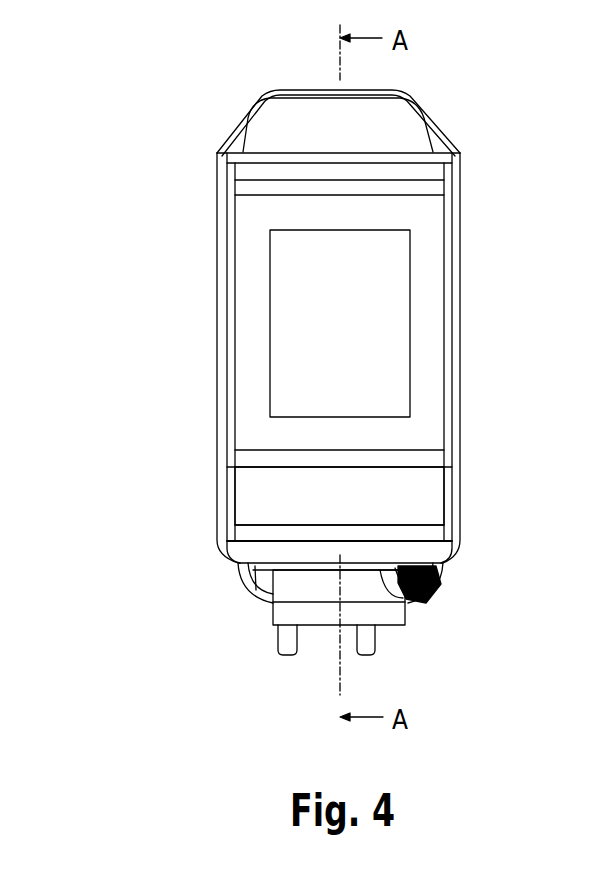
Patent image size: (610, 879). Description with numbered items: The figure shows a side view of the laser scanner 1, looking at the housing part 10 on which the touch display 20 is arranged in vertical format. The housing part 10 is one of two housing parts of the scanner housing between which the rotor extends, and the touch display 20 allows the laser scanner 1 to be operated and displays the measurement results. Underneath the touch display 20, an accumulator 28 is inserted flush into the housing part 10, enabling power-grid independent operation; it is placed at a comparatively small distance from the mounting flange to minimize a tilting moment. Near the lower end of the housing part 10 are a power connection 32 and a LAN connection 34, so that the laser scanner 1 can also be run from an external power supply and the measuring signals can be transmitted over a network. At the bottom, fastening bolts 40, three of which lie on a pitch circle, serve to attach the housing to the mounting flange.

The laser scanner 1 is at (481, 146).
The housing part 10 is at (453, 287).
The touch display 20 is at (305, 303).
The accumulator 28 is at (265, 493).
The power connection 32 is at (432, 590).
The LAN connection 34 is at (407, 582).
The fastening bolts 40 is at (283, 633).